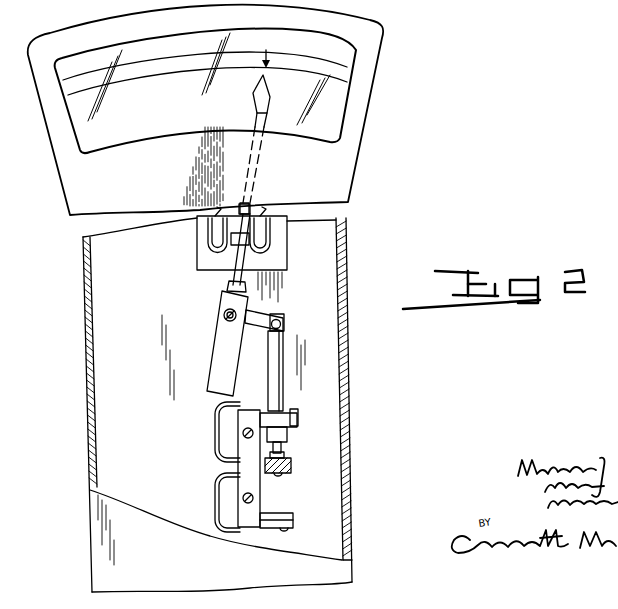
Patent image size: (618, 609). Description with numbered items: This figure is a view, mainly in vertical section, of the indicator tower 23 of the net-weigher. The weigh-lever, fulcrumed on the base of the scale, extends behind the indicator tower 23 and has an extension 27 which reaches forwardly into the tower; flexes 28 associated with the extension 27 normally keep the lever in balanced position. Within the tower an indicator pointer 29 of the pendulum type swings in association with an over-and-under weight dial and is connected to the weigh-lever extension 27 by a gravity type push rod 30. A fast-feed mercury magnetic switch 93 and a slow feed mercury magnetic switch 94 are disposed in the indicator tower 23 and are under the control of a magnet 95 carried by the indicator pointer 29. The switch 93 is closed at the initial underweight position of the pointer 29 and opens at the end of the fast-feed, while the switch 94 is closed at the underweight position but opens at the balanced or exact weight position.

The indicator tower 23 is at (368, 161).
The indicator pointer 29 is at (254, 114).
The slow feed mercury magnetic switch 94 is at (258, 208).
The fast-feed mercury magnetic switch 93 is at (210, 233).
The magnet 95 is at (220, 270).
The push rod 30 is at (280, 369).
The flexes 28 is at (231, 478).
The extension 27 is at (291, 466).